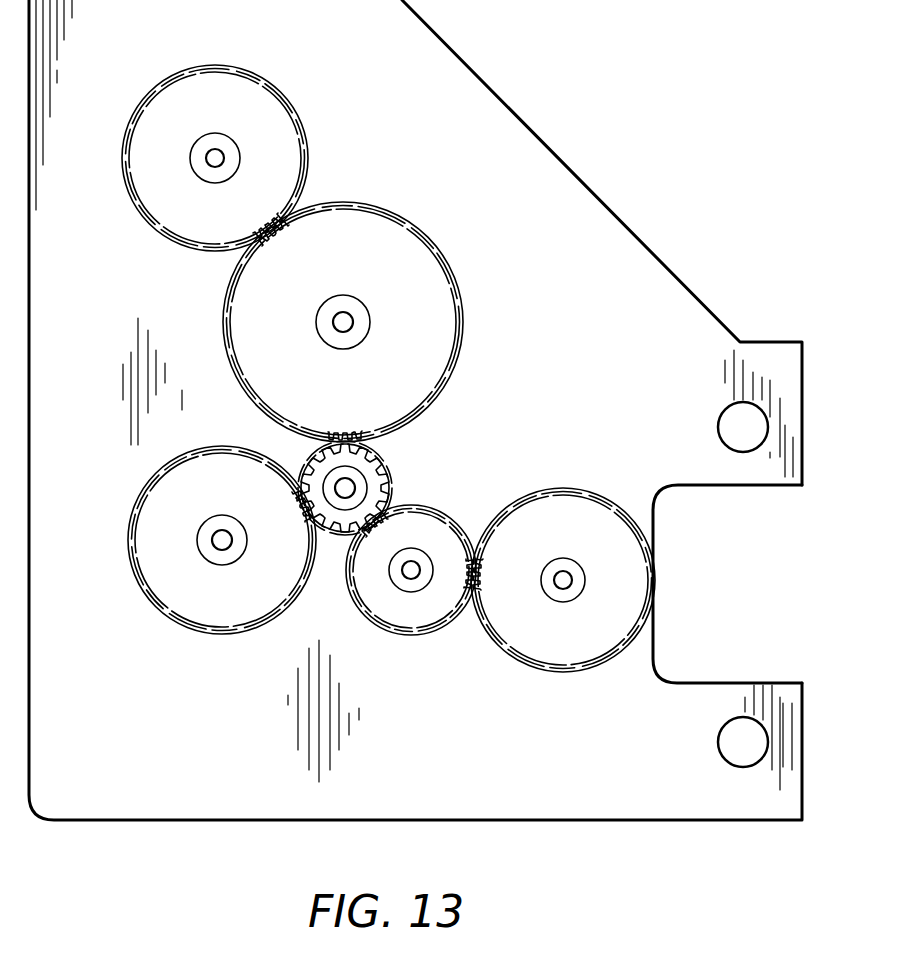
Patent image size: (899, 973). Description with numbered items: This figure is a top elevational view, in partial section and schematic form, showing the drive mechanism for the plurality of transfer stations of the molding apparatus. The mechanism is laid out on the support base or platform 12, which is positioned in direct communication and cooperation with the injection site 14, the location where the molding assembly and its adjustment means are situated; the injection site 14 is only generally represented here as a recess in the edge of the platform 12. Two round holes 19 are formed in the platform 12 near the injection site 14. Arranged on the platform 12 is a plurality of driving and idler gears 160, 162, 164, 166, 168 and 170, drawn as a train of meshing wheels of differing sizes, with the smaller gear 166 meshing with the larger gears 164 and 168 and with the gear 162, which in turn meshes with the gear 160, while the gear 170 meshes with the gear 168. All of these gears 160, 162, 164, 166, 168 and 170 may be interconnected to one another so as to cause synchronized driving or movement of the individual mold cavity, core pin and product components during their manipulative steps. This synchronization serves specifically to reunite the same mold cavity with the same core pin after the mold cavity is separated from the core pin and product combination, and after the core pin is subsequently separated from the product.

The support base or platform 12 is at (627, 203).
The injection site 14 is at (744, 582).
The mounting hole 19 is at (722, 432).
The driving and idler gear 160 is at (640, 472).
The driving and idler gear 162 is at (455, 521).
The driving and idler gear 164 is at (251, 633).
The driving and idler gear 166 is at (395, 488).
The driving and idler gear 168 is at (463, 325).
The driving and idler gear 170 is at (307, 138).